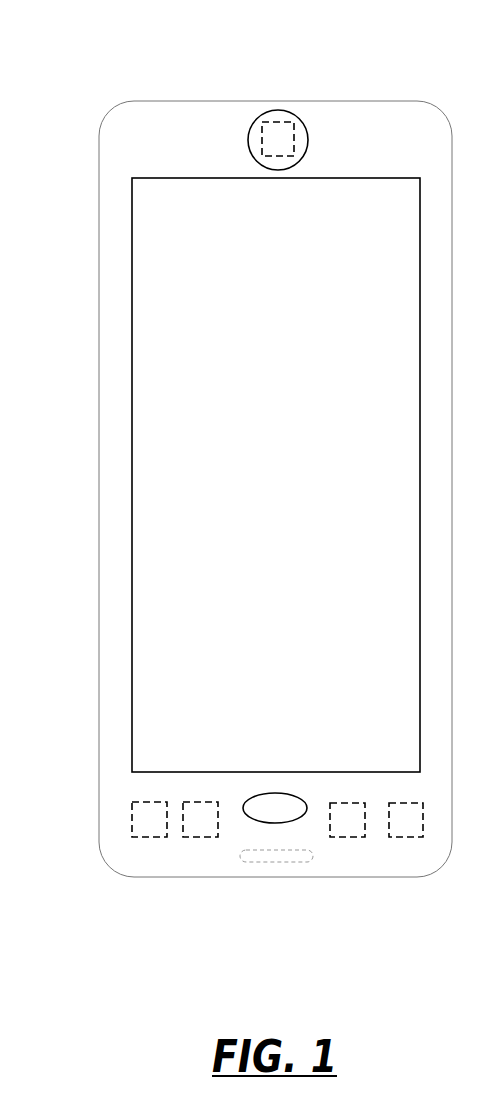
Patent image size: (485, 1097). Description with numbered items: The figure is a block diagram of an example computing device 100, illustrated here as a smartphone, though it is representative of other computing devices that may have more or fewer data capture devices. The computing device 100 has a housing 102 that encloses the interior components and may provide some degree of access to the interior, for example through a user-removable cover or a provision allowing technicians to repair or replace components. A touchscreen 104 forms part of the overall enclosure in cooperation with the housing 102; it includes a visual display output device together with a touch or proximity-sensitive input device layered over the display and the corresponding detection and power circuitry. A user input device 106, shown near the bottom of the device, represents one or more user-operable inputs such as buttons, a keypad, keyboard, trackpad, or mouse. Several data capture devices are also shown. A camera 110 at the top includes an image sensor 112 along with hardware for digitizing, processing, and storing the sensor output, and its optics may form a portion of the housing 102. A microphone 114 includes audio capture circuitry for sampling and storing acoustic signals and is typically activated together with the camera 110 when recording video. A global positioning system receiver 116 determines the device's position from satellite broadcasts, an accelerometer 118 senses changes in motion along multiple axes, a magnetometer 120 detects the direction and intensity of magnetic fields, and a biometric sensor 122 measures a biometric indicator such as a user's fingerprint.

The computing device 100 is at (66, 92).
The housing 102 is at (99, 325).
The touchscreen 104 is at (205, 218).
The user input device 106 is at (292, 818).
The camera 110 is at (308, 140).
The image sensor 112 is at (259, 123).
The microphone 114 is at (265, 862).
The global positioning system (GPS) receiver 116 is at (150, 837).
The accelerometer 118 is at (202, 837).
The magnetometer 120 is at (347, 837).
The biometric sensor 122 is at (405, 837).